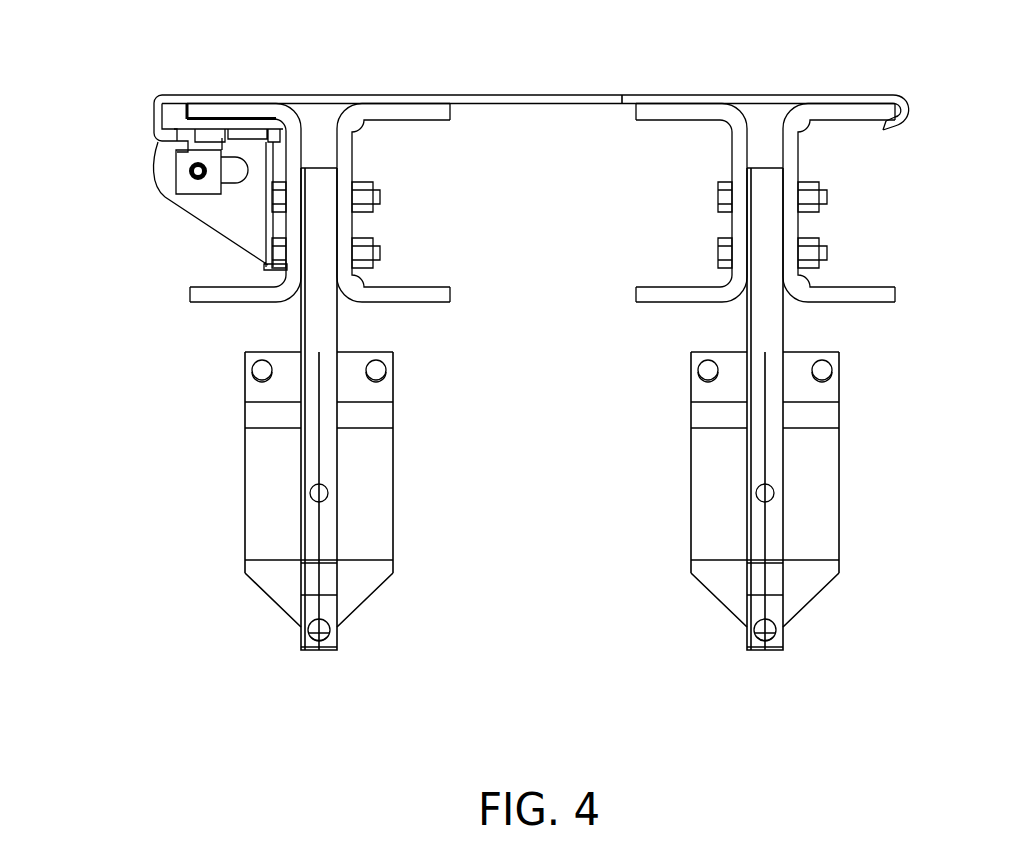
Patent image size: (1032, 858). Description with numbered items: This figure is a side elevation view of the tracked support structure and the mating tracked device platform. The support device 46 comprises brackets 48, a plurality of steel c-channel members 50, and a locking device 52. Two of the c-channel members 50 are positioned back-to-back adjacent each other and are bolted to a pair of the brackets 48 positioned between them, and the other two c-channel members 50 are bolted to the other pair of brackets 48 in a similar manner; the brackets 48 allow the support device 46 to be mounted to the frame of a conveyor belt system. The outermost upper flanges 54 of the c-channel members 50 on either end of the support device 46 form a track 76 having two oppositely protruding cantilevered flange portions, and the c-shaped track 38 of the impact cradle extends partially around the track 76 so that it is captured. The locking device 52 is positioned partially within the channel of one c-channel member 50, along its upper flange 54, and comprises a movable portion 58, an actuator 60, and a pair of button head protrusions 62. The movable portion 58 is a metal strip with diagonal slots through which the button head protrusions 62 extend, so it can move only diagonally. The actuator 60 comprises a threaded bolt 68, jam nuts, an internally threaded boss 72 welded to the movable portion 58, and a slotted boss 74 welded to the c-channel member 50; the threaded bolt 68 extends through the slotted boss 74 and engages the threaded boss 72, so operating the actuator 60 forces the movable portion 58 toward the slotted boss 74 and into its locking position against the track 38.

The track 38 is at (523, 100).
The support device 46 is at (308, 450).
The brackets 48 is at (813, 480).
The c-channel members 50 is at (300, 110).
The locking device 52 is at (214, 110).
The upper flange 54 is at (258, 110).
The movable portion 58 is at (177, 106).
The actuator 60 is at (190, 192).
The button head protrusions 62 is at (188, 143).
The threaded bolt 68 is at (191, 171).
The internally threaded boss 72 is at (234, 170).
The slotted boss 74 is at (223, 213).
The track 76 is at (882, 112).